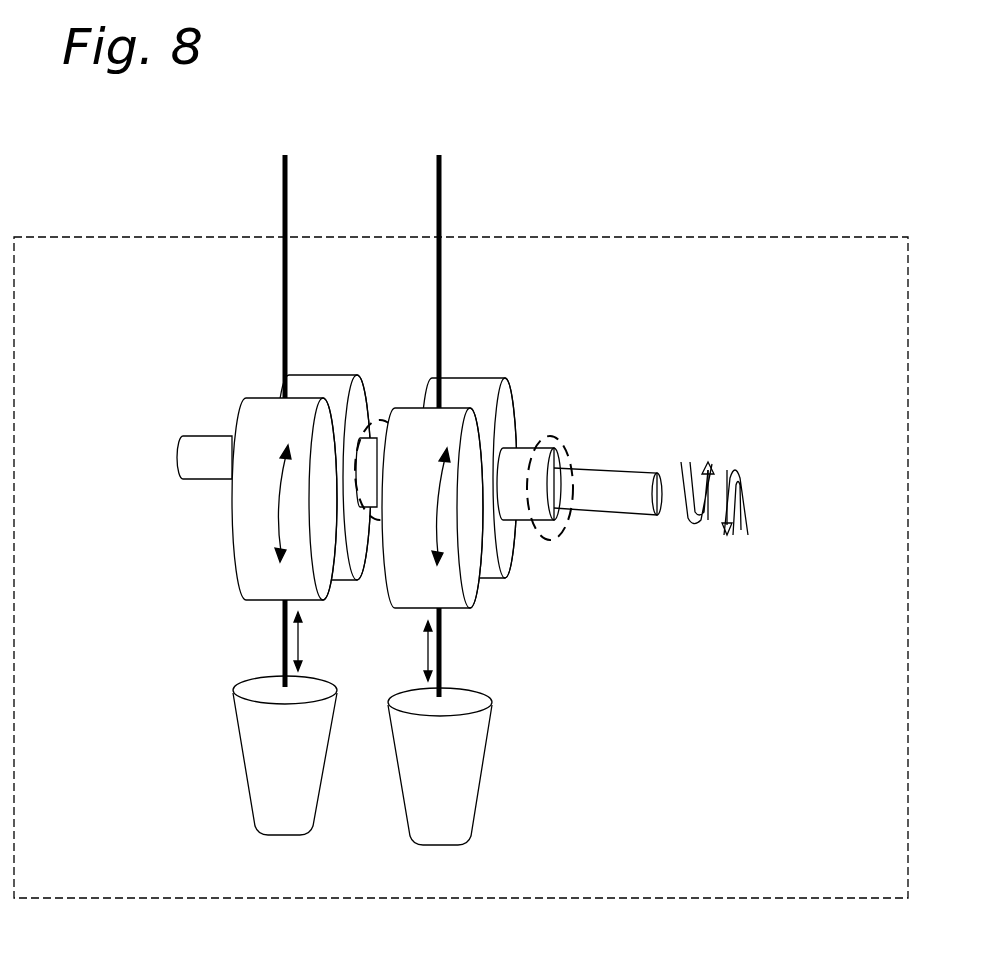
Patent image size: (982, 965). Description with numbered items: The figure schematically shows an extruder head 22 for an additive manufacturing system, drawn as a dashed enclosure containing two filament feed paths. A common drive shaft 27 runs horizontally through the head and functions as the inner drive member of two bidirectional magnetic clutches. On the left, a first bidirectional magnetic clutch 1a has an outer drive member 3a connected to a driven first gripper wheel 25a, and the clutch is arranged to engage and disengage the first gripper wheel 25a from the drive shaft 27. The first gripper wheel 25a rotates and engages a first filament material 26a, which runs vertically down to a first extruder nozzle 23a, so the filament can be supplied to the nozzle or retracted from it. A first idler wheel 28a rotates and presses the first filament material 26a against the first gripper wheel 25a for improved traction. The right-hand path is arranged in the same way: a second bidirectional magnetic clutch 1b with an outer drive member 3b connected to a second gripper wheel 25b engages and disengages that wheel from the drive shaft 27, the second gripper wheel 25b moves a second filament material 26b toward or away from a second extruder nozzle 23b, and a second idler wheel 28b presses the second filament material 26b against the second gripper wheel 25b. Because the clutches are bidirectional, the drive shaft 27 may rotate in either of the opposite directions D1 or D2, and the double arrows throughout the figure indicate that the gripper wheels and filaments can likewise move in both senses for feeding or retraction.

The extruder head 22 is at (583, 237).
The first gripper wheel 25a is at (315, 390).
The second gripper wheel 25b is at (465, 390).
The first idler wheel 28a is at (232, 540).
The second idler wheel 28b is at (470, 587).
The drive shaft 27 is at (195, 443).
The outer drive member 3a is at (377, 442).
The outer drive member 3b is at (525, 450).
The first bidirectional magnetic clutch 1a is at (377, 513).
The second bidirectional magnetic clutch 1b is at (560, 531).
The first filament material 26a is at (285, 635).
The second filament material 26b is at (442, 650).
The first extruder nozzle 23a is at (252, 768).
The second extruder nozzle 23b is at (473, 770).
The direction of rotation D1 is at (700, 527).
The direction of rotation D2 is at (734, 476).